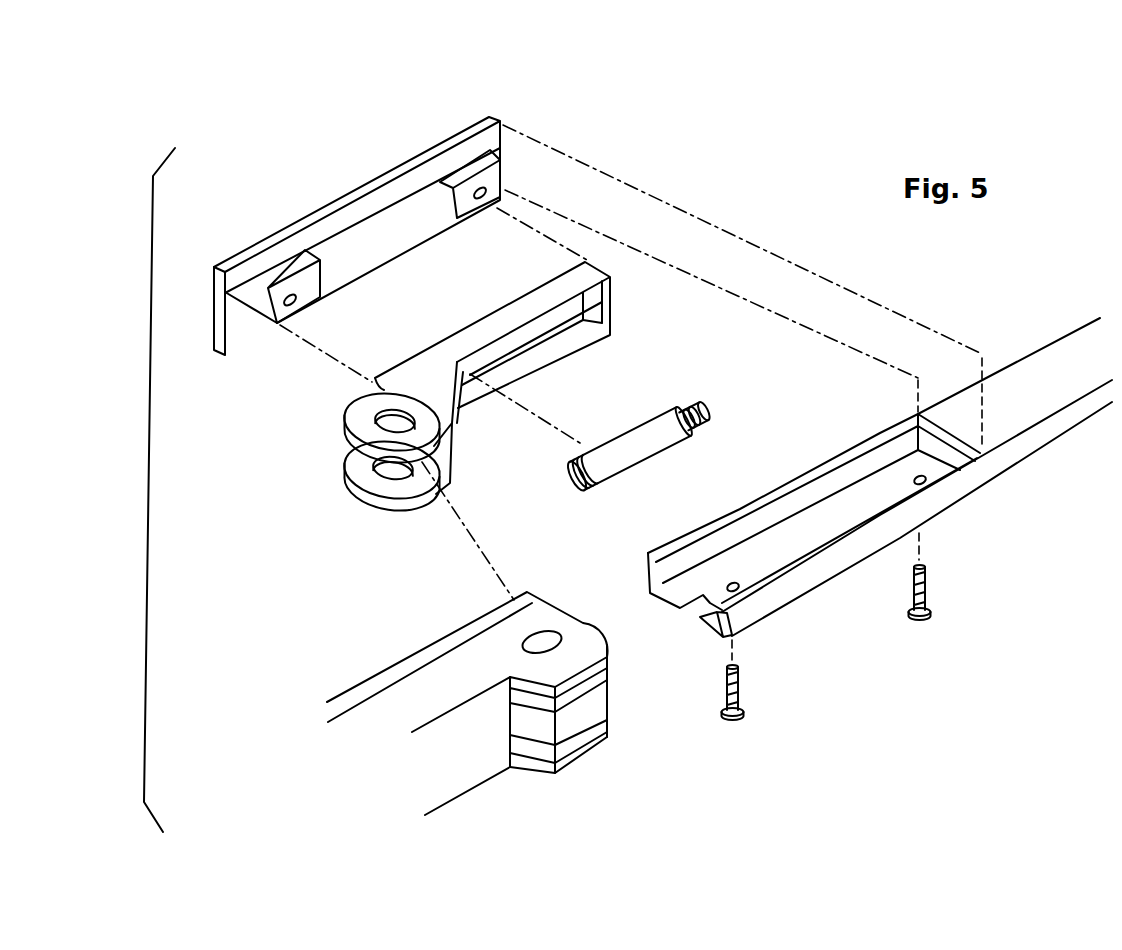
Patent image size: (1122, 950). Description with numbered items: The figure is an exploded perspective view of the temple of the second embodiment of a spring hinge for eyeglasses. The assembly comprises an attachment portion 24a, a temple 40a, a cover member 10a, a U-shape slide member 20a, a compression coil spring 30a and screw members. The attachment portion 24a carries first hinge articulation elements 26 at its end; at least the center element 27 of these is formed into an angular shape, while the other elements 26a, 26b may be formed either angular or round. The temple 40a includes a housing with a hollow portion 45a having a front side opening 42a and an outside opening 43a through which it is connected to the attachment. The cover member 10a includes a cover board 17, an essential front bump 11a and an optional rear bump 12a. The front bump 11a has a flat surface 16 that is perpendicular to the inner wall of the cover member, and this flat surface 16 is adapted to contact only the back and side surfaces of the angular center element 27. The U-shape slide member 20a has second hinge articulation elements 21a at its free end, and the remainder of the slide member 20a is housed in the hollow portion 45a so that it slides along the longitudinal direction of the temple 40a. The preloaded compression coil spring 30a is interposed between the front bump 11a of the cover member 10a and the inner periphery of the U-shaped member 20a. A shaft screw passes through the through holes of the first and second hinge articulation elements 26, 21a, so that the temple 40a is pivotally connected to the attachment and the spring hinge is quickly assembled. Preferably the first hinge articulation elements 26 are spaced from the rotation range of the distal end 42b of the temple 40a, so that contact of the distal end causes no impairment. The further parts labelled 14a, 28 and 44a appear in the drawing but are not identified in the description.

The cover member 10a is at (392, 158).
The front bump 11a is at (292, 263).
The rear bump 12a is at (475, 163).
The mounting plate 14a is at (352, 222).
The flat surface 16 is at (243, 350).
The cover board 17 is at (238, 252).
The U-shape slide member 20a is at (568, 290).
The second hinge articulation elements 21a is at (378, 492).
The attachment portion 24a is at (340, 697).
The first hinge articulation elements 26 is at (540, 658).
The other first hinge articulation element 26a is at (577, 630).
The other first hinge articulation element 26b is at (607, 737).
The center element 27 is at (606, 703).
The bracket flange 28 is at (533, 369).
The compression coil spring 30a is at (712, 398).
The temple 40a is at (1020, 380).
The front side opening 42a is at (668, 607).
The distal end 42b is at (648, 563).
The outside opening 43a is at (843, 500).
The screw hole 44a is at (933, 487).
The hollow portion 45a is at (850, 535).